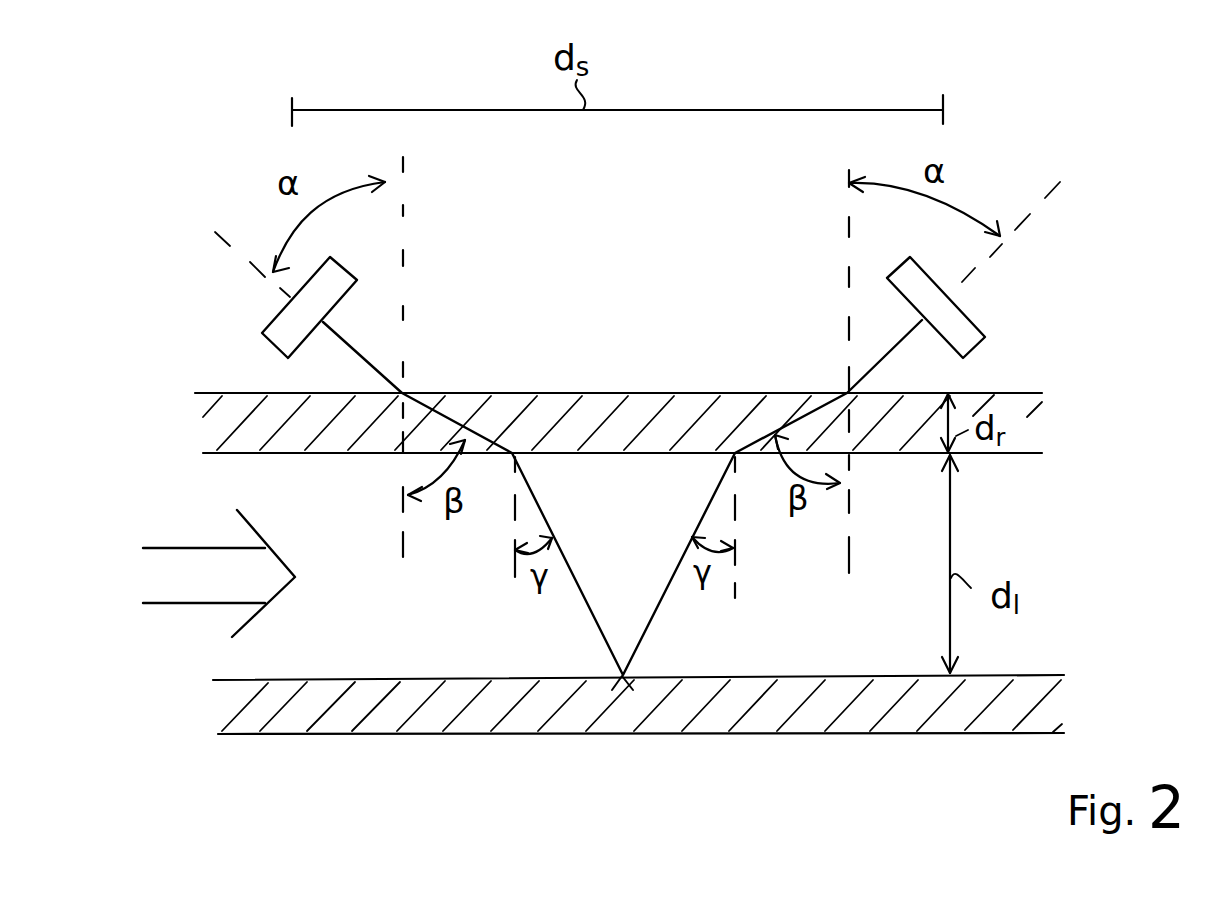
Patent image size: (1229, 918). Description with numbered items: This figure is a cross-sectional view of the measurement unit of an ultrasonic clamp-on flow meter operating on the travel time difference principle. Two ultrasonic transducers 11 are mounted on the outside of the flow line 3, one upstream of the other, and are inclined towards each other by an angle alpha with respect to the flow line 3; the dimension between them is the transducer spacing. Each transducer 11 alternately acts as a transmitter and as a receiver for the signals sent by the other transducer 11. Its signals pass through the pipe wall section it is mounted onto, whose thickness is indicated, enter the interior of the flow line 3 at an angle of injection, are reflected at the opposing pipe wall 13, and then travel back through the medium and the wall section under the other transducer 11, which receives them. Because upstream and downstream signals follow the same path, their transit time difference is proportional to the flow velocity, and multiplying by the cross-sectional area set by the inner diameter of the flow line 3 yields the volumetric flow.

The flow line 3 is at (281, 718).
The ultrasonic transducer 11 is at (260, 346).
The opposing pipe wall 13 is at (622, 680).